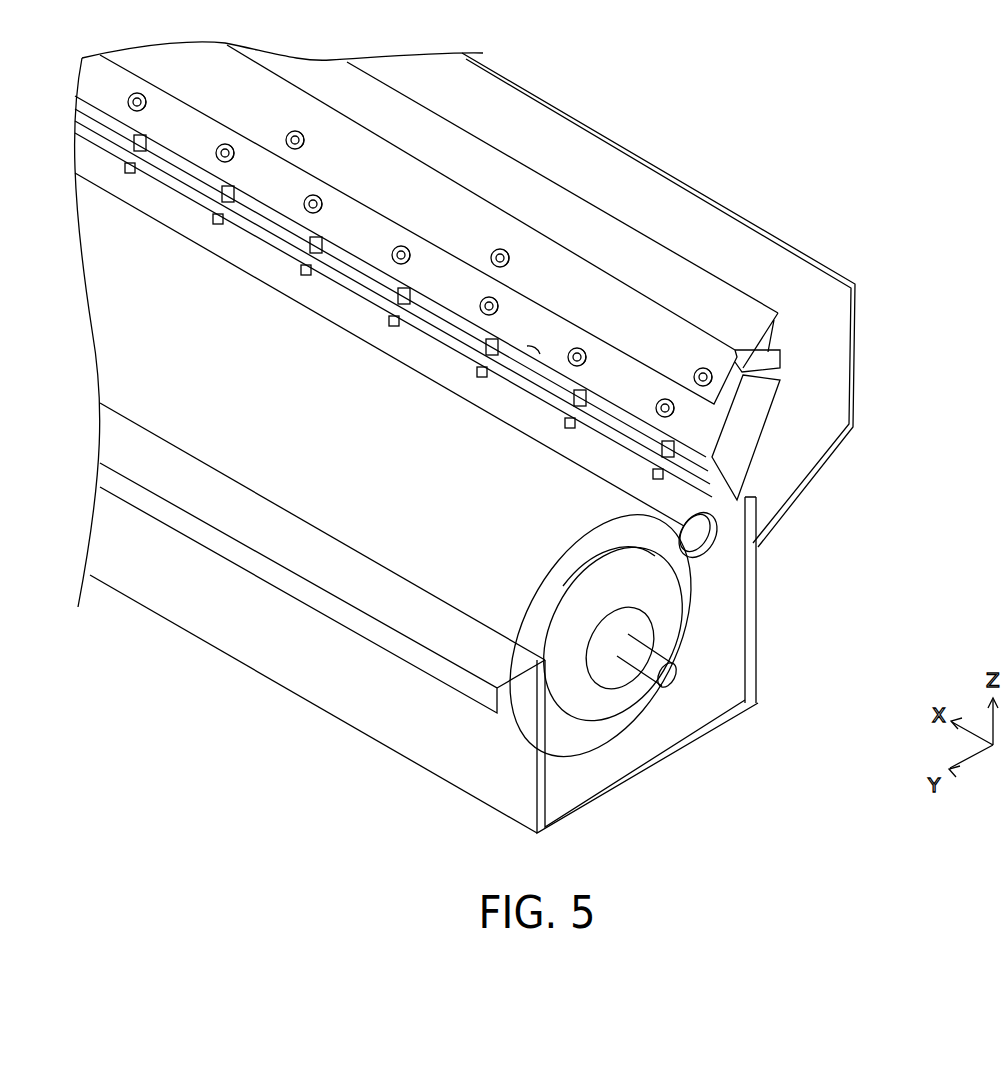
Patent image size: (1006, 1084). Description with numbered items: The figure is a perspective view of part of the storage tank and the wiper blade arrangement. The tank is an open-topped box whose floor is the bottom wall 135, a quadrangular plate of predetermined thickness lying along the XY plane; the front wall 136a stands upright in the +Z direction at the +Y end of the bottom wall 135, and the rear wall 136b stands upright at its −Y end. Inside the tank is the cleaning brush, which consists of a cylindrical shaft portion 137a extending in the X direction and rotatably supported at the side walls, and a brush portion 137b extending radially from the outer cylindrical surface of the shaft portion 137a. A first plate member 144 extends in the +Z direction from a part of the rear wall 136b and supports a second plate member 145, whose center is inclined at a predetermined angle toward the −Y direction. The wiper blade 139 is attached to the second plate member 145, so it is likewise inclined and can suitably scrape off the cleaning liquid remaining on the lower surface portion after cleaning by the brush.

The bottom wall 135 is at (612, 755).
The front wall 136a is at (293, 658).
The rear wall 136b is at (836, 344).
The shaft portion 137a is at (672, 676).
The brush portion 137b is at (440, 555).
The wiper blade 139 is at (735, 302).
The first plate member 144 is at (727, 652).
The second plate member 145 is at (717, 512).